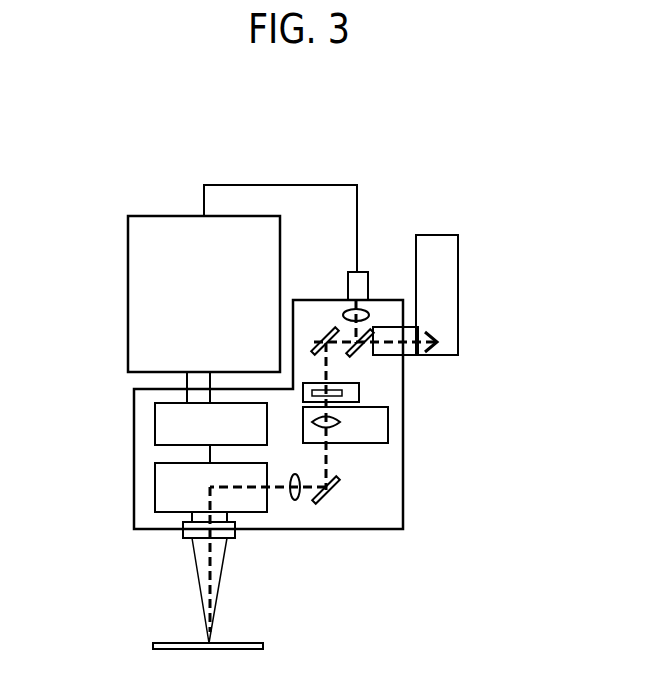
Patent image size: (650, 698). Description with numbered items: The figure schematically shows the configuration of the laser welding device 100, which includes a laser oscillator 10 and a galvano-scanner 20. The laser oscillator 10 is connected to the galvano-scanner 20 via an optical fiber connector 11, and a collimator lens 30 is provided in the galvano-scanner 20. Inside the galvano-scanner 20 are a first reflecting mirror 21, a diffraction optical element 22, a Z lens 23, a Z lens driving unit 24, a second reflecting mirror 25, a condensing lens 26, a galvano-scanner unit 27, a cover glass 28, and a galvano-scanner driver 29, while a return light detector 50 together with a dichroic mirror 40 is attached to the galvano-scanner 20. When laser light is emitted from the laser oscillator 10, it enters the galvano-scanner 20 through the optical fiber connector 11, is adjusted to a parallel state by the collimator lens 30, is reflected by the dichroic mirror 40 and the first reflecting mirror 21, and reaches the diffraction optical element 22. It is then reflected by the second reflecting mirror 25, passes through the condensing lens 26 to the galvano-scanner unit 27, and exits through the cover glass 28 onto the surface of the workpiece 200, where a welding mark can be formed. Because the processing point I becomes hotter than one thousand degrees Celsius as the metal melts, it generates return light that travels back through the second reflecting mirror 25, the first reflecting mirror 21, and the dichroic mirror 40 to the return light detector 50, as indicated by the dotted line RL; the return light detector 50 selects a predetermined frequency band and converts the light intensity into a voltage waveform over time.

The laser welding device 100 is at (538, 188).
The laser oscillator 10 is at (128, 253).
The optical fiber connector 11 is at (372, 278).
The galvano-scanner 20 is at (417, 513).
The first reflecting mirror 21 is at (321, 328).
The diffraction optical element (DOE) 22 is at (360, 391).
The Z lens 23 is at (340, 420).
The Z lens driving unit 24 is at (390, 428).
The second reflecting mirror 25 is at (328, 503).
The condensing lens 26 is at (293, 500).
The galvano-scanner unit 27 is at (155, 495).
The cover glass 28 is at (183, 532).
The galvano-scanner driver 29 is at (155, 427).
The collimator lens 30 is at (347, 313).
The dichroic mirror 40 is at (365, 358).
The return light detector 50 is at (458, 265).
The return light RL is at (403, 322).
The workpiece 200 is at (252, 643).
The processing point I is at (205, 637).